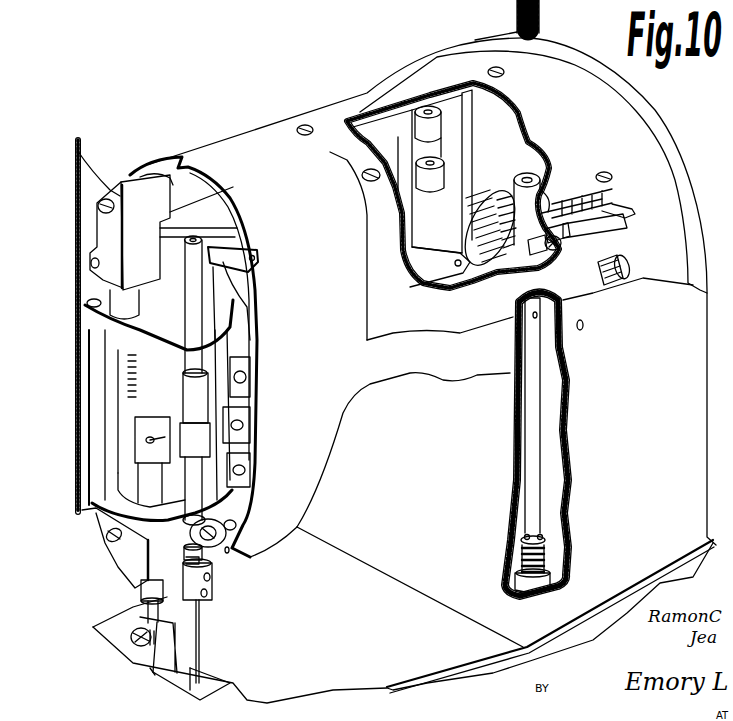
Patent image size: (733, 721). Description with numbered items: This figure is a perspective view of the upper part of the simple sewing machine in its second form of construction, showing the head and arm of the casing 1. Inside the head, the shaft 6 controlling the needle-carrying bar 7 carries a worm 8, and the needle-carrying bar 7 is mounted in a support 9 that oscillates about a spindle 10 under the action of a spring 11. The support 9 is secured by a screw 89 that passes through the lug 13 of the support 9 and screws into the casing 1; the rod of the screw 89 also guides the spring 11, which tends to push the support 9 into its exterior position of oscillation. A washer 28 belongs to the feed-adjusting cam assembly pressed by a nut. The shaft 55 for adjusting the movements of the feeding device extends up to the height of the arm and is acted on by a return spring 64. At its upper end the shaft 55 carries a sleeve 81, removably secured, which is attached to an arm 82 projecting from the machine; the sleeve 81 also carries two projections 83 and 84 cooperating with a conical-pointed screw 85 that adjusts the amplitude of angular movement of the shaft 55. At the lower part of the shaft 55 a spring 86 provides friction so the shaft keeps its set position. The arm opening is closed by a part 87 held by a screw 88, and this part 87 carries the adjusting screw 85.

The casing 1 is at (396, 370).
The shaft 6 is at (437, 277).
The needle-carrying bar 7 is at (186, 402).
The worm 8 is at (254, 0).
The support 9 is at (153, 344).
The spindle 10 is at (163, 247).
The spring 11 is at (245, 517).
The lug 13 is at (208, 514).
The washer 28 is at (199, 638).
The shaft 55 is at (527, 432).
The return spring 64 is at (518, 2).
The sleeve 81 is at (514, 192).
The arm 82 is at (615, 210).
The projection 83 is at (536, 252).
The projection 84 is at (568, 232).
The screw 85 is at (626, 280).
The spring 86 is at (520, 560).
The part 87 is at (511, 211).
The screw 88 is at (305, 125).
The screw 89 is at (203, 533).